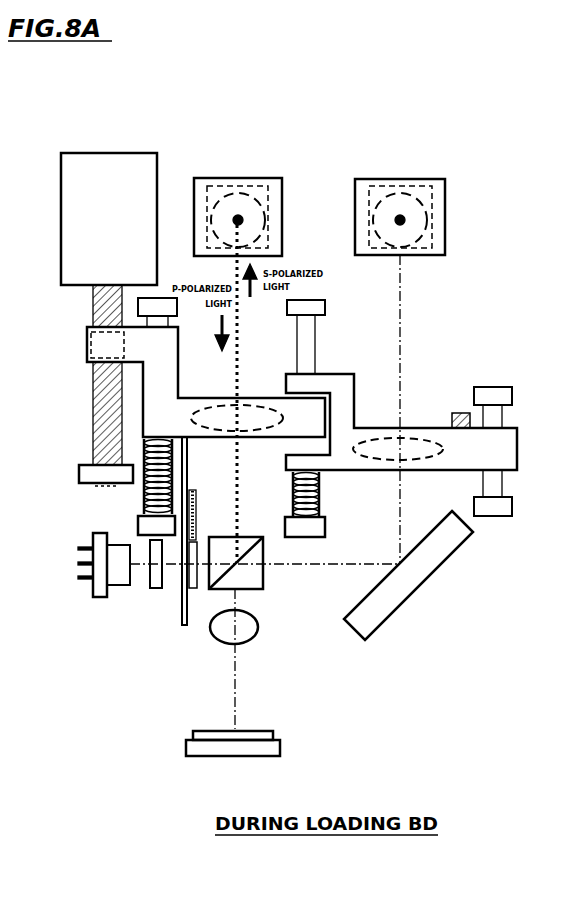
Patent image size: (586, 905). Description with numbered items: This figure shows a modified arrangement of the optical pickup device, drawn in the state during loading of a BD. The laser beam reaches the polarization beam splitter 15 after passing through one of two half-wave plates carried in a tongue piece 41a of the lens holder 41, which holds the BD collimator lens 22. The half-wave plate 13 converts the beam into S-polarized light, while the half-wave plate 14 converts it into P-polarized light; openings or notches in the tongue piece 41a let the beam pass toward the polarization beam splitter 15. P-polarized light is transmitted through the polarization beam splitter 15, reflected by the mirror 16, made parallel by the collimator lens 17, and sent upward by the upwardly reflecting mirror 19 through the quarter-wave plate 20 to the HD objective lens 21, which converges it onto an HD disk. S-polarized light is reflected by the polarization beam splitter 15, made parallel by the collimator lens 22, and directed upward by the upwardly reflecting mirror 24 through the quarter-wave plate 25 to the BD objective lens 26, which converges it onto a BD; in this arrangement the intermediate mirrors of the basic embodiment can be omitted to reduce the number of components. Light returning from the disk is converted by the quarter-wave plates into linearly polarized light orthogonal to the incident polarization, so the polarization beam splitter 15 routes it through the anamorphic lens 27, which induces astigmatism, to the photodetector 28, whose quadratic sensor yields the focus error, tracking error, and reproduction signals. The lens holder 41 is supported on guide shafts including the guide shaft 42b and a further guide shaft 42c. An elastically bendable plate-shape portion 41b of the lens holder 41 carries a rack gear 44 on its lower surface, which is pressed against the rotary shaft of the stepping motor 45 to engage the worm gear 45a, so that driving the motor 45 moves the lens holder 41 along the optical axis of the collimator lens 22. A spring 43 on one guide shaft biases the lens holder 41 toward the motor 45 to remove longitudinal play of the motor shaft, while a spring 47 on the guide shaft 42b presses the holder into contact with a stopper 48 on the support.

The half-wave plate 13 is at (182, 594).
The half-wave plate 14 is at (192, 490).
The polarization beam splitter 15 is at (255, 589).
The mirror 16 is at (432, 566).
The collimator lens 17 is at (413, 458).
The upwardly reflecting mirror 19 is at (445, 217).
The quarter-wave plate 20 is at (393, 186).
The HD objective lens 21 is at (428, 190).
The collimator lens 22 is at (222, 397).
The upwardly reflecting mirror 24 is at (283, 220).
The quarter-wave plate 25 is at (225, 183).
The BD objective lens 26 is at (262, 190).
The anamorphic lens 27 is at (225, 643).
The photodetector 28 is at (262, 731).
The lens holder 41 is at (300, 422).
The tongue piece 41a is at (185, 625).
The plate-shape portion 41b is at (90, 364).
The guide shaft 42b is at (307, 352).
The adjusting screw 42c is at (503, 412).
The spring 43 is at (143, 498).
The rack gear 44 is at (91, 340).
The motor 45 is at (112, 156).
The worm gear 45a is at (93, 423).
The spring 47 is at (312, 500).
The stopper 48 is at (453, 413).